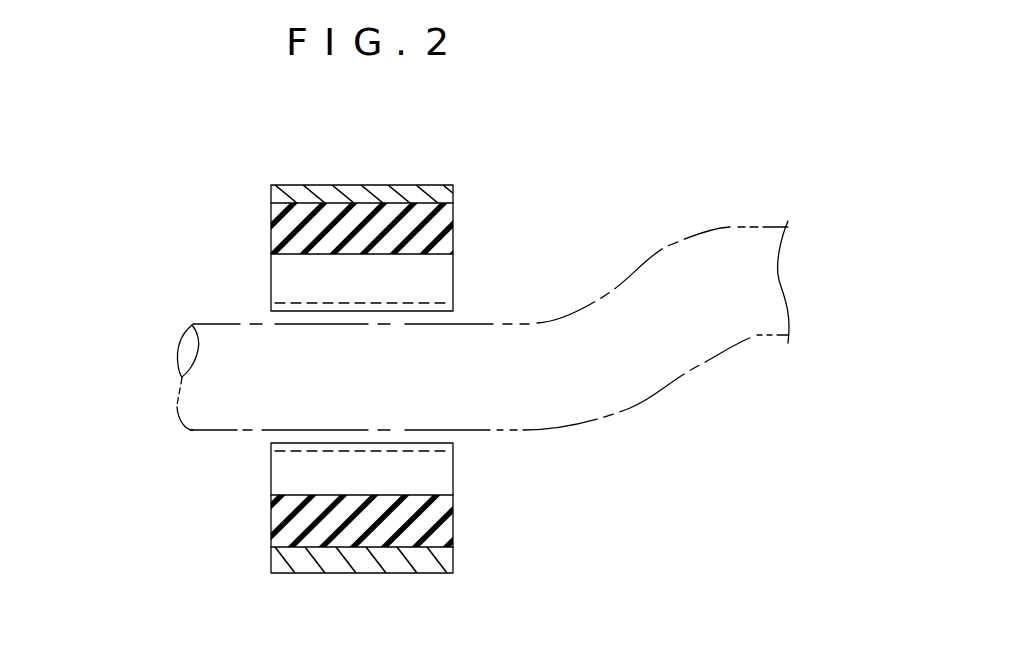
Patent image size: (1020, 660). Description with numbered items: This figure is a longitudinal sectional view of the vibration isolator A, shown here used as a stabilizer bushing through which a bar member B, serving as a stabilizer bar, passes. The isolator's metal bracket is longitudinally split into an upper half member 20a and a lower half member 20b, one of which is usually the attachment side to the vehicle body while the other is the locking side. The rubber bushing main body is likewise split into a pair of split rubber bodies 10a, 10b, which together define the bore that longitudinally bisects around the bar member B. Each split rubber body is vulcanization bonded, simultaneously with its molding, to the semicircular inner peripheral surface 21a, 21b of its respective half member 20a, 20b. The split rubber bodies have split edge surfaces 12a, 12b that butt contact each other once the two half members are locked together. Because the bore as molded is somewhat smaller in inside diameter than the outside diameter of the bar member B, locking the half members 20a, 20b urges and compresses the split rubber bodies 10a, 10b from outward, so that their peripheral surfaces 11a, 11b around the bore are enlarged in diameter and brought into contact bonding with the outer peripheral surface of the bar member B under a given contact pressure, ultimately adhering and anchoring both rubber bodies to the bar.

The vibration isolator A is at (363, 205).
The bar member B is at (609, 394).
The split rubber body 10a is at (423, 233).
The split rubber body 10b is at (433, 515).
The peripheral surface around the bore 11a is at (293, 256).
The peripheral surface around the bore 11b is at (303, 495).
The split edge surface 12a is at (440, 313).
The split edge surface 12b is at (437, 440).
The half member 20a is at (283, 183).
The half member 20b is at (271, 564).
The semicircular inner peripheral surface 21a is at (352, 202).
The semicircular inner peripheral surface 21b is at (381, 548).